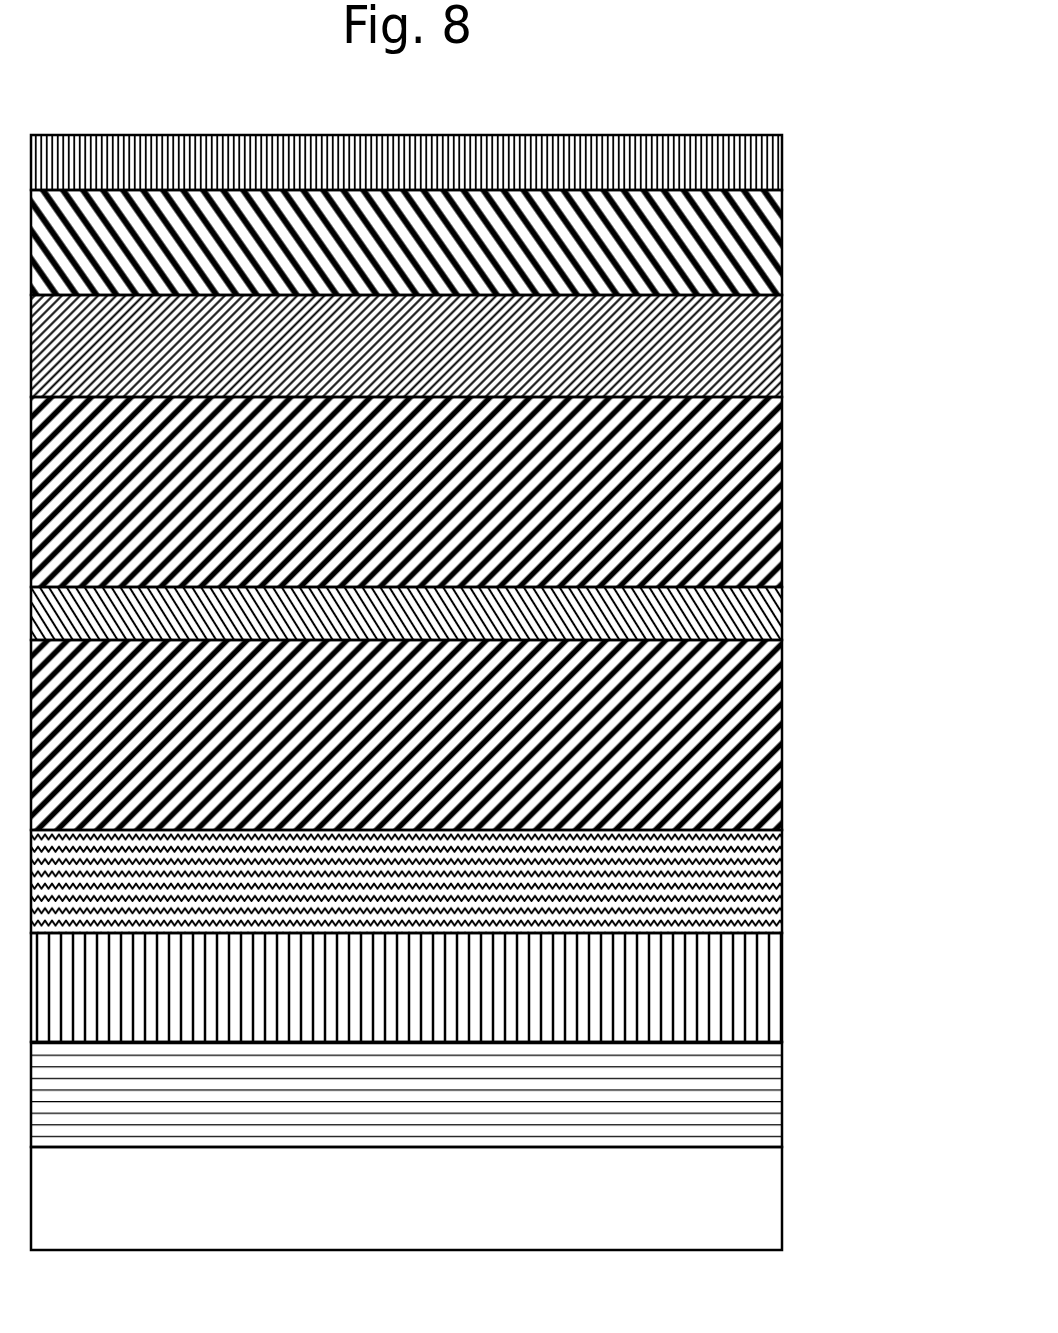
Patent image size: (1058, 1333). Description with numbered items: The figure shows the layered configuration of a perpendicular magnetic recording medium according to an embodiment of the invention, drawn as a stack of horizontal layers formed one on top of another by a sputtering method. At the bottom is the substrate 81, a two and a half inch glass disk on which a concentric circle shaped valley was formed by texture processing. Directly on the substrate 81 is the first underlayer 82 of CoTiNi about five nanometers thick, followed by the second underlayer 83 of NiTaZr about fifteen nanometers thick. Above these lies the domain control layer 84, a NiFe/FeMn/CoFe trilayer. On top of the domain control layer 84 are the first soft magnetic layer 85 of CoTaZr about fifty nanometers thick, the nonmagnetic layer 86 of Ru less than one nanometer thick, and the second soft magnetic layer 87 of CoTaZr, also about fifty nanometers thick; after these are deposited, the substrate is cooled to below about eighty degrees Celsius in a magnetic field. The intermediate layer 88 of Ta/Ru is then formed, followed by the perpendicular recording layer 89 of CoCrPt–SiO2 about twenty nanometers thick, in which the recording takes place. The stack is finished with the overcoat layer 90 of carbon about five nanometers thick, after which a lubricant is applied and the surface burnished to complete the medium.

The substrate 81 is at (727, 1200).
The first underlayer 82 is at (727, 1112).
The second underlayer 83 is at (728, 1007).
The domain control layer 84 is at (743, 890).
The first soft magnetic layer 85 is at (745, 760).
The nonmagnetic layer 86 is at (750, 625).
The second soft magnetic layer 87 is at (770, 507).
The intermediate layer 88 is at (750, 348).
The perpendicular recording layer 89 is at (735, 257).
The overcoat layer 90 is at (747, 172).